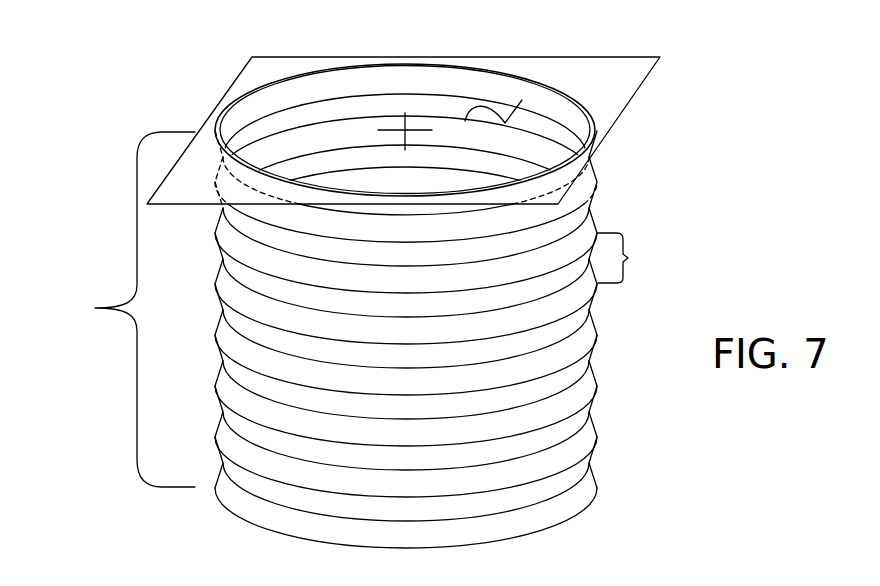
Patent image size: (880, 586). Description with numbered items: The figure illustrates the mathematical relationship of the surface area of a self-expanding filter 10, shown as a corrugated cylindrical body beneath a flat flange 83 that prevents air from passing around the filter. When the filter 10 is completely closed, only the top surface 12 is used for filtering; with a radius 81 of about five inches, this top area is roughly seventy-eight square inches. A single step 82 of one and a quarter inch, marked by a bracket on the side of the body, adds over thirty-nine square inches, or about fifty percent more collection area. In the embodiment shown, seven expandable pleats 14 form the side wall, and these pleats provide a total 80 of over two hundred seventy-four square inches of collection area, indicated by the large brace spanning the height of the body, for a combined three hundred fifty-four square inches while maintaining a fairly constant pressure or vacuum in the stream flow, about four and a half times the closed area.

The self-expanding filter 10 is at (623, 155).
The top surface 12 is at (484, 106).
The pleats 14 is at (588, 403).
The total 80 is at (95, 308).
The radius 81 is at (405, 130).
The single step 82 is at (654, 261).
The flange 83 is at (645, 57).